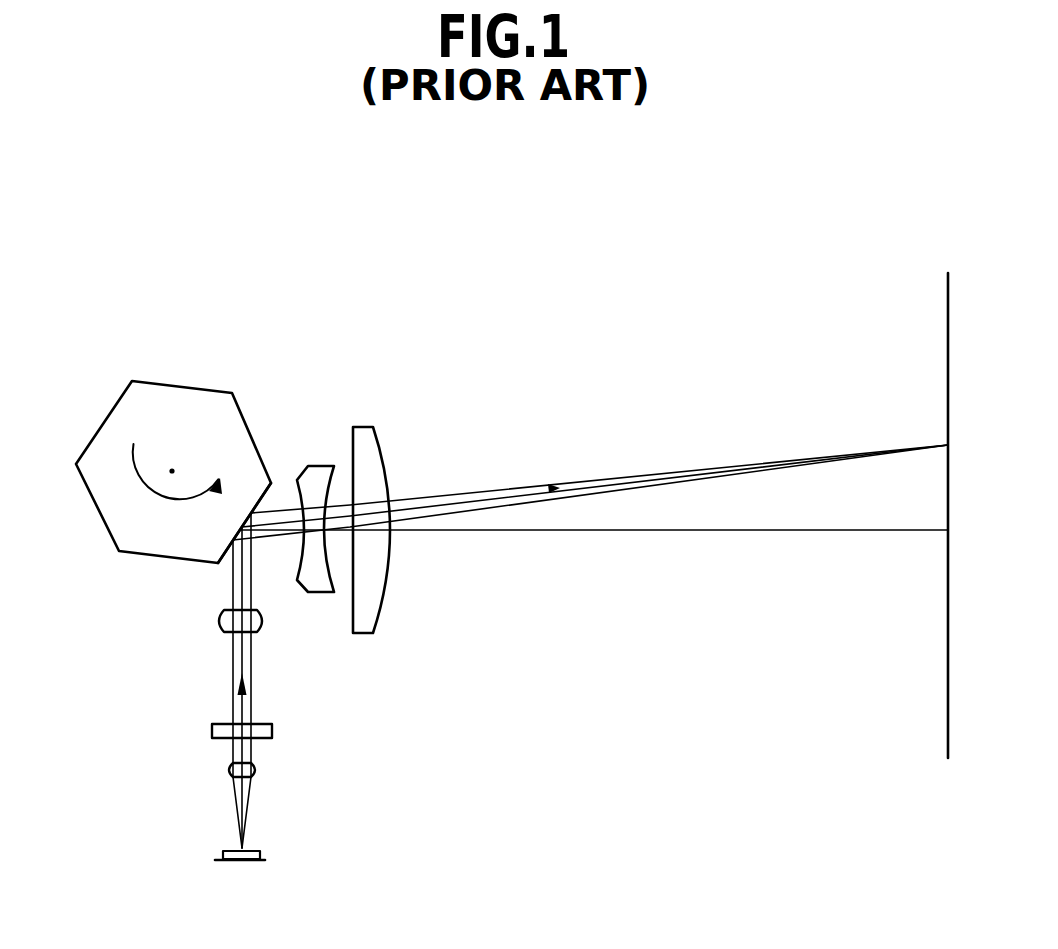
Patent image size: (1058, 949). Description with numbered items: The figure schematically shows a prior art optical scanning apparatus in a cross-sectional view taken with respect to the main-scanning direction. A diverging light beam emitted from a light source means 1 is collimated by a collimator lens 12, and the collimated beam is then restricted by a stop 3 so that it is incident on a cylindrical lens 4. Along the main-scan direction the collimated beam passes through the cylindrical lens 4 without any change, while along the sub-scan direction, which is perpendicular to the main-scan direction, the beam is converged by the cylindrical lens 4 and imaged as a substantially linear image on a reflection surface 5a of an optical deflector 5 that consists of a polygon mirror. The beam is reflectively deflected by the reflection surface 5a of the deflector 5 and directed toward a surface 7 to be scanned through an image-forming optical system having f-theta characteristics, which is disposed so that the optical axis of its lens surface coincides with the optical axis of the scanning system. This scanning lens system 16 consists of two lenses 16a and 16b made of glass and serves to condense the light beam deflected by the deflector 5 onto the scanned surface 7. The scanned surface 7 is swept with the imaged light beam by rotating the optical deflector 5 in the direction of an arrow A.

The light source means 1 is at (247, 861).
The stop 3 is at (272, 731).
The cylindrical lens 4 is at (264, 621).
The optical deflector 5 is at (128, 552).
The reflection surface 5a is at (232, 542).
The surface to be scanned 7 is at (948, 342).
The collimator lens 12 is at (256, 770).
The scanning lens system 16 is at (364, 456).
The lens 16a is at (322, 466).
The lens 16b is at (373, 427).
The arrow A is at (132, 495).